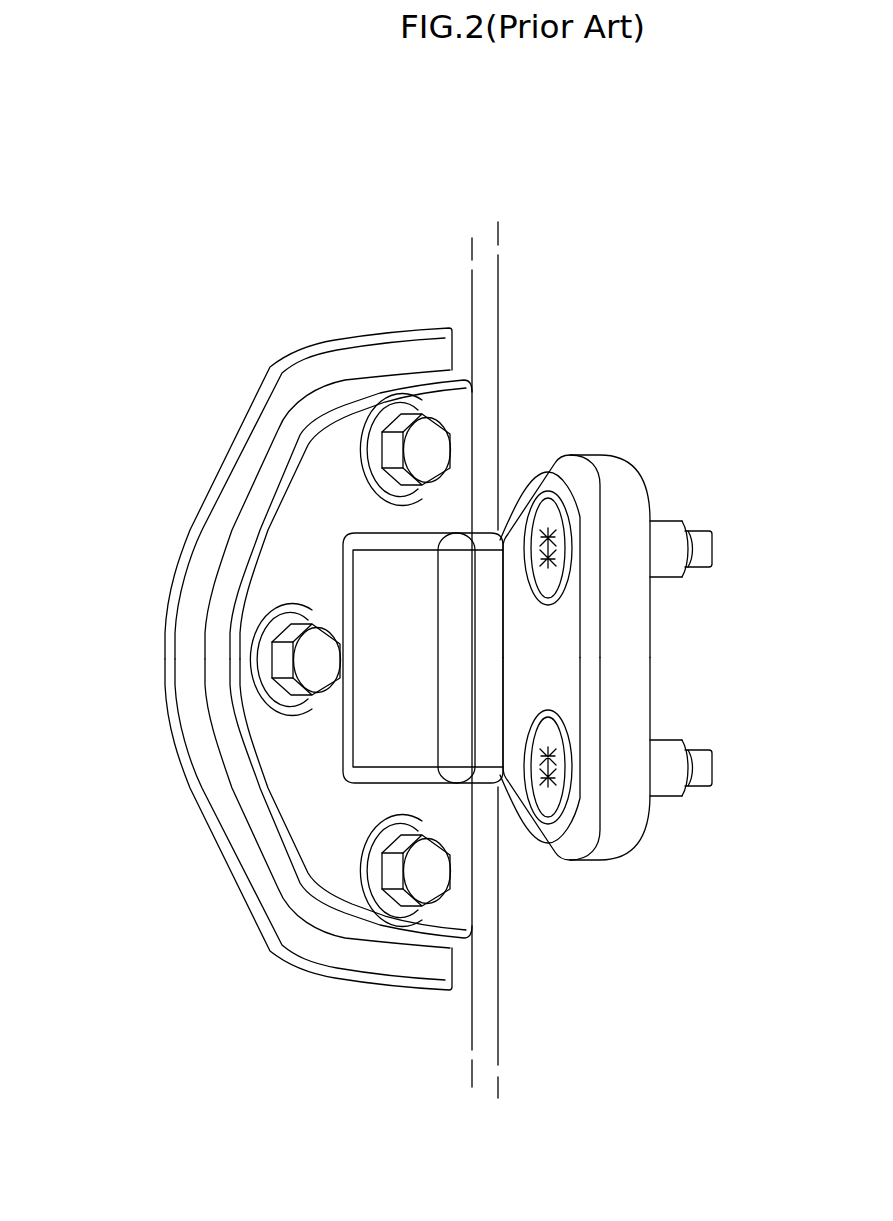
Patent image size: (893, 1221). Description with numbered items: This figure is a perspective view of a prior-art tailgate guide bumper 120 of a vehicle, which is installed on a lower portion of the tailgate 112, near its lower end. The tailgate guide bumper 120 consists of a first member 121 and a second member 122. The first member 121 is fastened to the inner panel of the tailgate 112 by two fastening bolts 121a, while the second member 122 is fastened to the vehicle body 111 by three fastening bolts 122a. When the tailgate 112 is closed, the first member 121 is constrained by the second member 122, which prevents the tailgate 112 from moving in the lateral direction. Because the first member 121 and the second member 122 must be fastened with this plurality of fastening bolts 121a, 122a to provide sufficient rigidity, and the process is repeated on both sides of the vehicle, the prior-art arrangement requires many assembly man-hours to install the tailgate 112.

The tailgate guide bumper 120 is at (657, 143).
The vehicle body 111 is at (445, 283).
The tailgate 112 is at (520, 290).
The first member 121 is at (608, 477).
The fastening bolts 121a is at (672, 537).
The second member 122 is at (247, 460).
The fastening bolts 122a is at (283, 667).